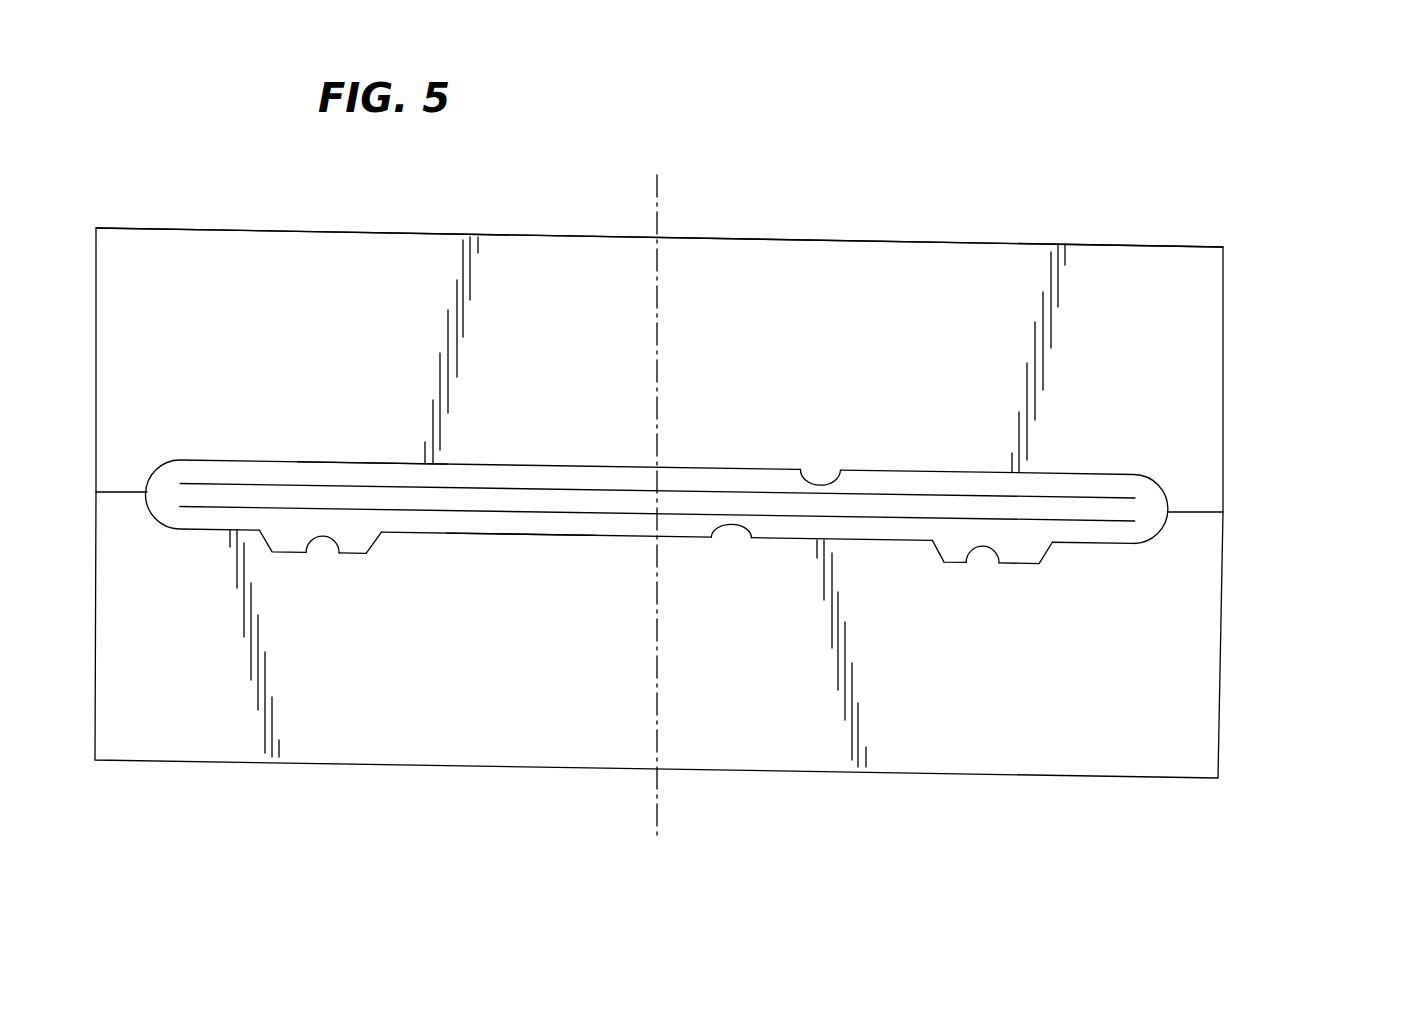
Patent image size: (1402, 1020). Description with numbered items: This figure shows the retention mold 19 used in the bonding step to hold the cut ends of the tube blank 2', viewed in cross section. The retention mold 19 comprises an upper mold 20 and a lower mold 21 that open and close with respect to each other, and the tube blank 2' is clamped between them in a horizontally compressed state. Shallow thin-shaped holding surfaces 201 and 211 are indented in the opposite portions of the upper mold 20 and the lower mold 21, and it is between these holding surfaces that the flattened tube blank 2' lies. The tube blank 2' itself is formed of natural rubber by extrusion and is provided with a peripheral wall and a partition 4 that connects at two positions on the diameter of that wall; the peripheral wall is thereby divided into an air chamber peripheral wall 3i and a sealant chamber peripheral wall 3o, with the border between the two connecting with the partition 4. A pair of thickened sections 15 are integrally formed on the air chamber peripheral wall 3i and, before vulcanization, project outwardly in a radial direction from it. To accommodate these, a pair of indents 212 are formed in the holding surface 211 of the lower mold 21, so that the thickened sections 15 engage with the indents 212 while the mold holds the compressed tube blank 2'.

The retention mold 19 is at (994, 220).
The upper mold 20 is at (1237, 296).
The lower mold 21 is at (1230, 678).
The tube blank 2' is at (656, 441).
The partition 4 is at (596, 497).
The sealant chamber peripheral wall 3o is at (358, 468).
The air chamber peripheral wall 3i is at (500, 523).
The thickened section 15 is at (283, 537).
The indent 212 is at (337, 540).
The holding surface of the lower mold 211 is at (753, 539).
The holding surface of the upper mold 201 is at (839, 476).